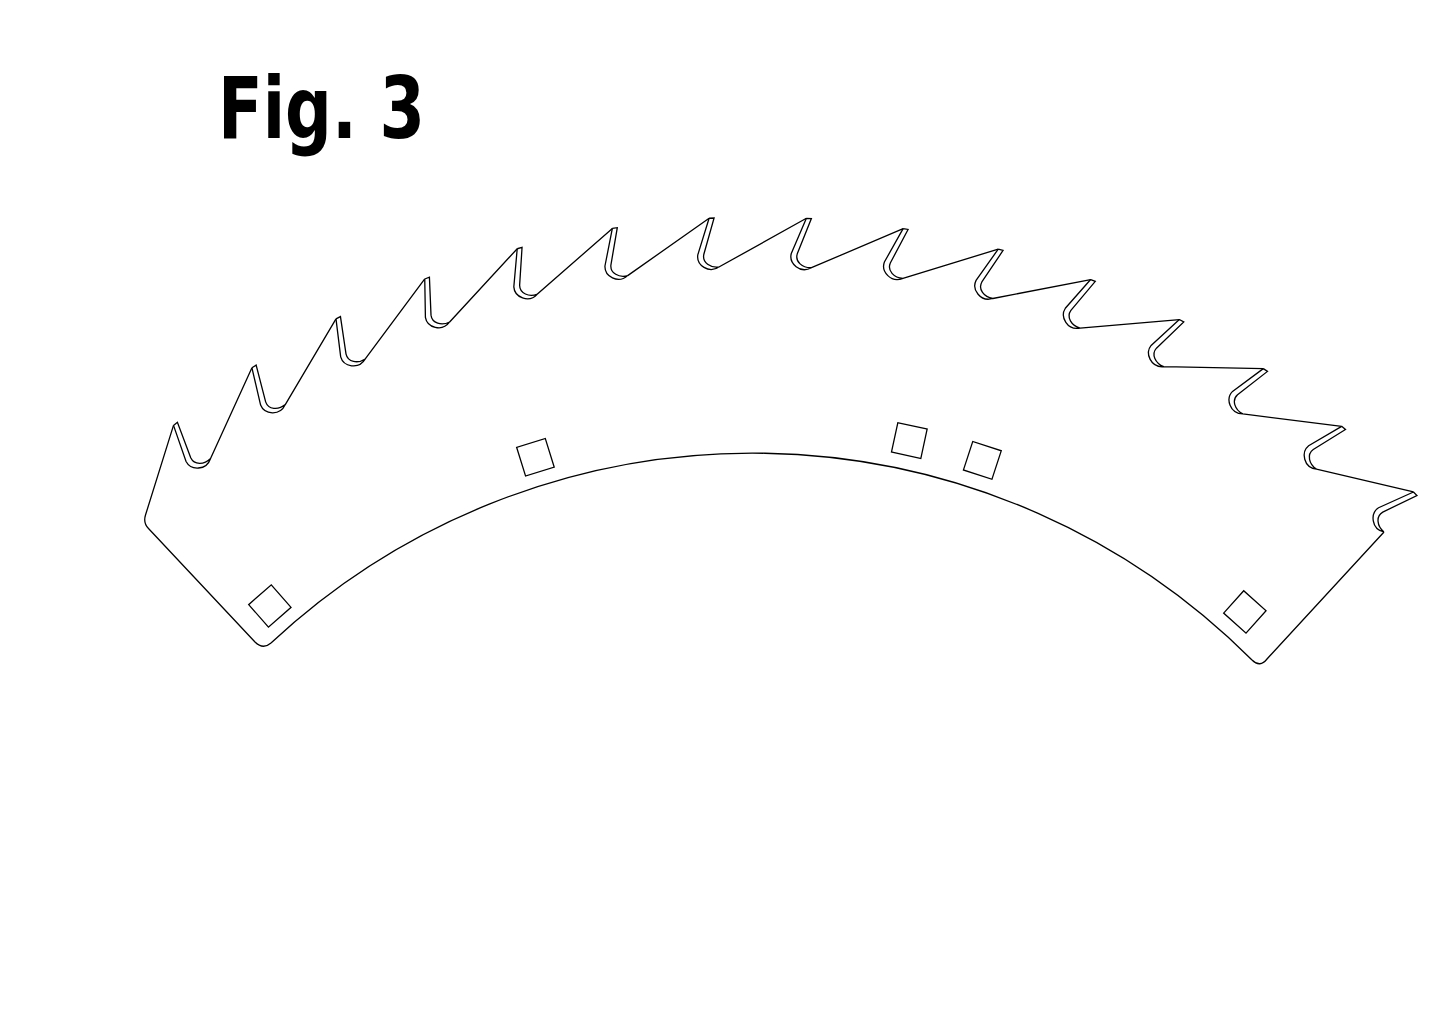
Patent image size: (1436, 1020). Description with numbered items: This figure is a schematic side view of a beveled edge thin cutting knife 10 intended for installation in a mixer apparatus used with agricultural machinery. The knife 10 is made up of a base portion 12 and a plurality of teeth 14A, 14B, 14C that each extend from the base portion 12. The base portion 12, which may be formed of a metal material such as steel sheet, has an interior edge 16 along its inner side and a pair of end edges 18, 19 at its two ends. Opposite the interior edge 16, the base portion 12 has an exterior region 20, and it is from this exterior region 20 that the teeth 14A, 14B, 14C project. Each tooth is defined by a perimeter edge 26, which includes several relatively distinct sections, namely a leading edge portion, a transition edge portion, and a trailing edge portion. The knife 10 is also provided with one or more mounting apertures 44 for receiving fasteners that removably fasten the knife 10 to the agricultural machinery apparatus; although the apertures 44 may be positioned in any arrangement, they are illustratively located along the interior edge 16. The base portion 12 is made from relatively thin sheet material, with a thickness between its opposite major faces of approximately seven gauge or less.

The beveled edge thin cutting knife 10 is at (1147, 183).
The base portion 12 is at (757, 427).
The tooth 14A is at (320, 363).
The tooth 14B is at (240, 418).
The tooth 14C is at (397, 318).
The interior edge 16 is at (472, 515).
The end edge 18 is at (175, 567).
The end edge 19 is at (1352, 588).
The exterior region 20 is at (748, 297).
The perimeter edge 26 is at (582, 250).
The mounting apertures 44 is at (287, 597).